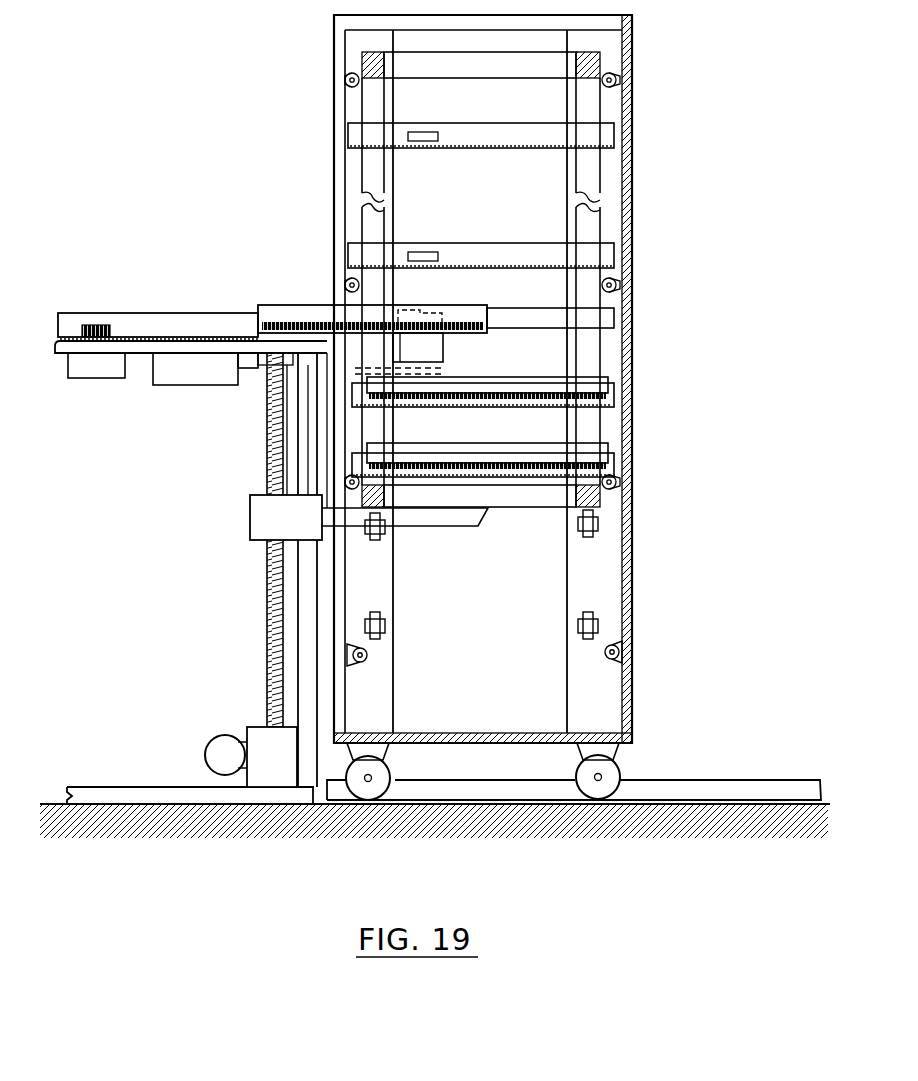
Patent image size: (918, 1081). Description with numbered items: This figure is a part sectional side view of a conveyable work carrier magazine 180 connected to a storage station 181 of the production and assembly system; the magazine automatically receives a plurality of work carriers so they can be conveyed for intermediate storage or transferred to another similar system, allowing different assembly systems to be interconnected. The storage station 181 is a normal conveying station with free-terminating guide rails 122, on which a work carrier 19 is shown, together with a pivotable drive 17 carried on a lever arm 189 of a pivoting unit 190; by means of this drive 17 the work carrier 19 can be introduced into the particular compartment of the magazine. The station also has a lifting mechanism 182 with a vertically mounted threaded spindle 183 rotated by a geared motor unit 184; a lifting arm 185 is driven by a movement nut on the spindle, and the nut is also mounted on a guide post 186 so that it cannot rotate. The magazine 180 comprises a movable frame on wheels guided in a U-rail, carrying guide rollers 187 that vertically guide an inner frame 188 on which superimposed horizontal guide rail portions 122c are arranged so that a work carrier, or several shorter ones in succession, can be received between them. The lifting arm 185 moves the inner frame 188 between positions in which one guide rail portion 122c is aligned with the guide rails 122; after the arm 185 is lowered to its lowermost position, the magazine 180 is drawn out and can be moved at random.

The drive 17 is at (93, 372).
The work carrier 19 is at (300, 318).
The guide rails 122 is at (229, 323).
The guide rail portions 122c is at (508, 248).
The magazine 180 is at (703, 176).
The storage station 181 is at (191, 252).
The lifting mechanism 182 is at (227, 540).
The threaded spindle 183 is at (267, 643).
The geared motor unit 184 is at (258, 735).
The lifting arm 185 is at (453, 516).
The guide post 186 is at (306, 587).
The guide rollers 187 is at (610, 646).
The inner frame 188 is at (588, 108).
The lever arm 189 is at (256, 366).
The pivoting unit 190 is at (173, 377).